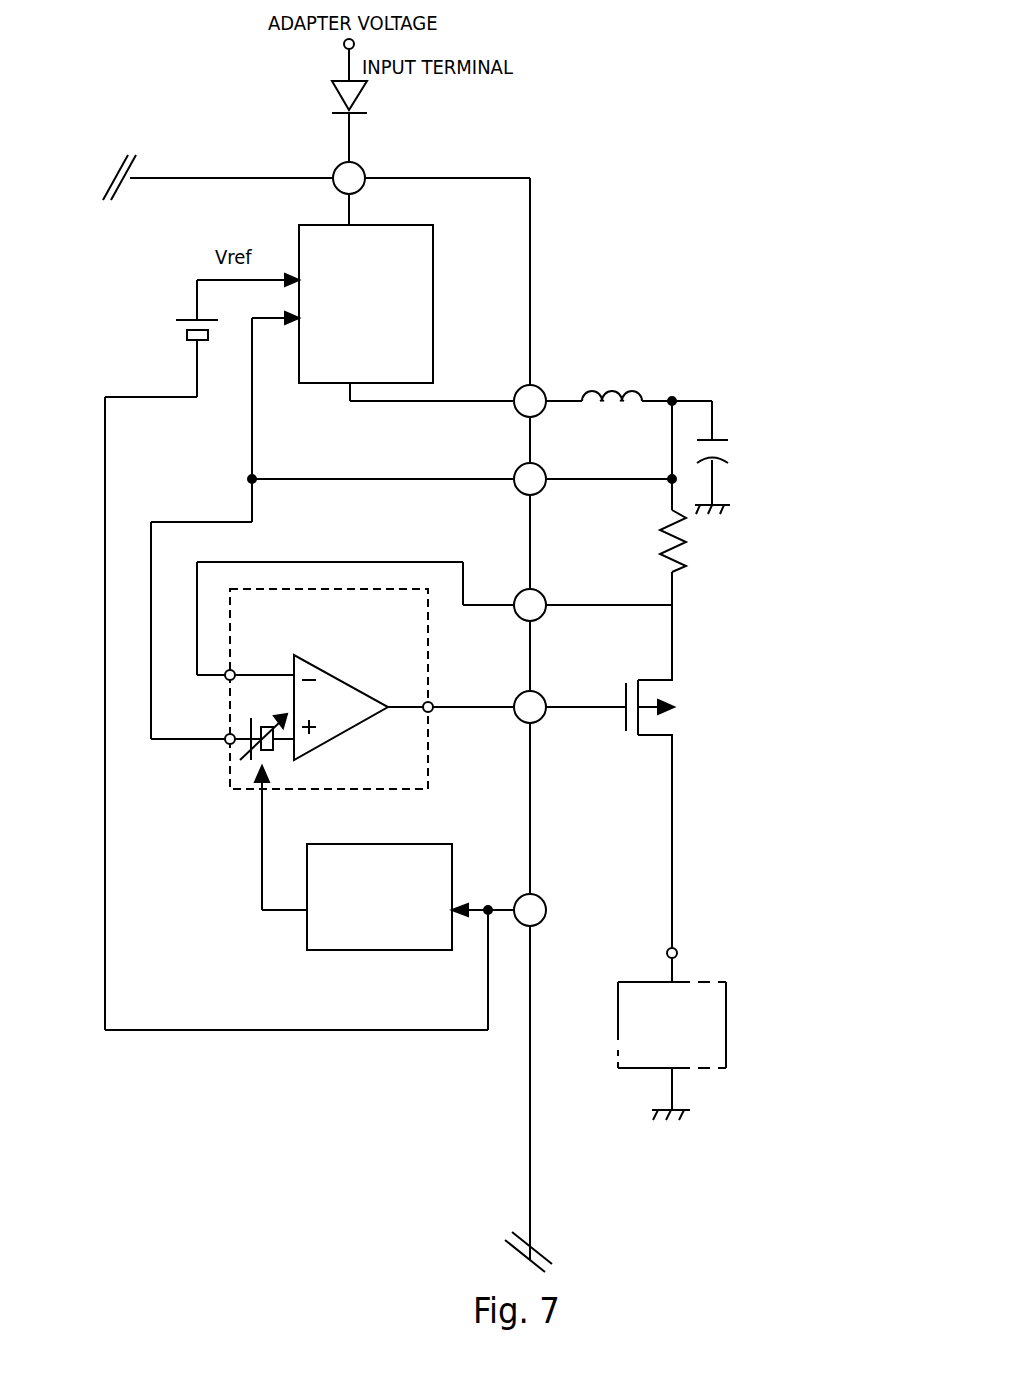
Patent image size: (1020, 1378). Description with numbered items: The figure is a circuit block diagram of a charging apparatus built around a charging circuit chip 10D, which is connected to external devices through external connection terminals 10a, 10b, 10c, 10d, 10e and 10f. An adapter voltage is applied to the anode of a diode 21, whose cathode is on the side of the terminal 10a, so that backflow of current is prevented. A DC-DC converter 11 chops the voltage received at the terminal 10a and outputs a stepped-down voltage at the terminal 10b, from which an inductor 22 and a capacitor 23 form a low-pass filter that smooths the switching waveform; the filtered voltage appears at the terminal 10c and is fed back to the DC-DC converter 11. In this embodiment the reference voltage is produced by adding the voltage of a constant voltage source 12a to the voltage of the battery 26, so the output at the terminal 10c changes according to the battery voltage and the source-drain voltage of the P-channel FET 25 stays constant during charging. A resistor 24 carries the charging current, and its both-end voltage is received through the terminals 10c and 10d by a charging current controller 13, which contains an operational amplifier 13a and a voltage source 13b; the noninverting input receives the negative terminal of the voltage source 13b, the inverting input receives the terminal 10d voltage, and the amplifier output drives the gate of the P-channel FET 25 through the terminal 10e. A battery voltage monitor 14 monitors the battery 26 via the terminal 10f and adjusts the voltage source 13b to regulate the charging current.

The diode 21 is at (368, 97).
The external connection terminal 10a is at (362, 168).
The charging circuit chip 10D is at (531, 200).
The DC-DC converter 11 is at (433, 250).
The constant voltage source 12a is at (185, 336).
The external connection terminal 10b is at (540, 388).
The external connection terminal 10c is at (546, 475).
The external connection terminal 10d is at (546, 600).
The external connection terminal 10e is at (546, 702).
The external connection terminal 10f is at (546, 905).
The inductor 22 is at (635, 390).
The capacitor 23 is at (730, 450).
The resistor 24 is at (685, 545).
The charging current controller 13 is at (356, 722).
The operational amplifier 13a is at (330, 740).
The voltage source 13b is at (258, 763).
The battery voltage monitor 14 is at (423, 950).
The P-channel field effect transistor 25 is at (675, 722).
The battery 26 is at (726, 1000).